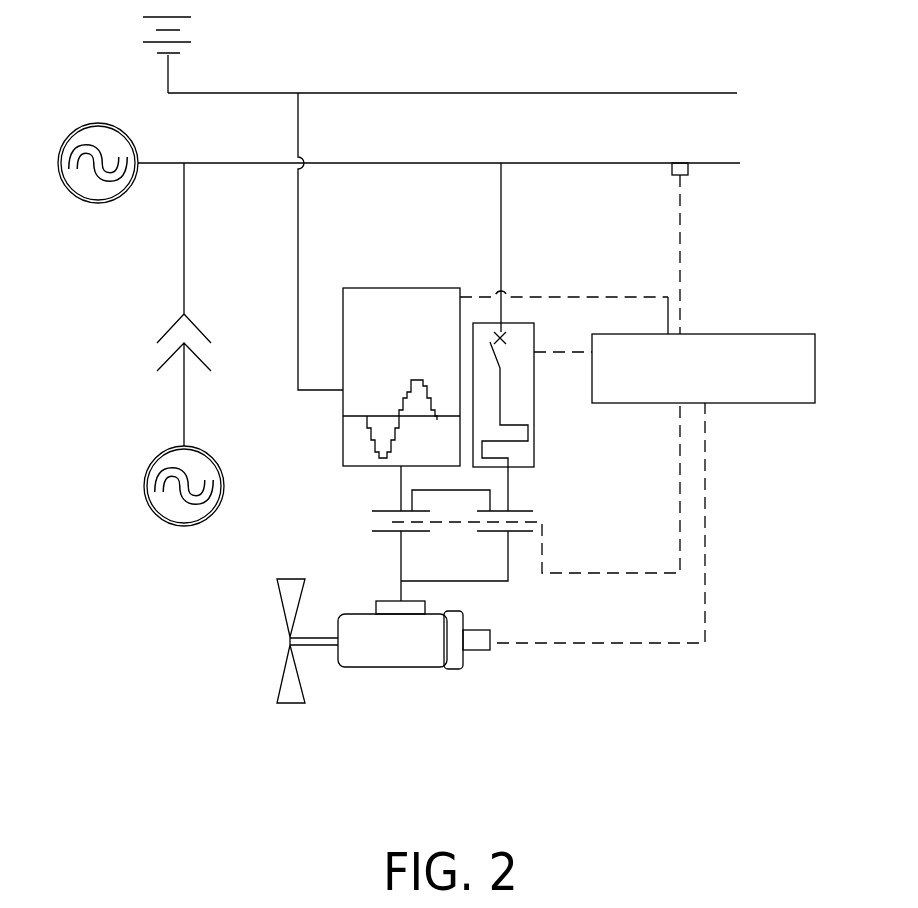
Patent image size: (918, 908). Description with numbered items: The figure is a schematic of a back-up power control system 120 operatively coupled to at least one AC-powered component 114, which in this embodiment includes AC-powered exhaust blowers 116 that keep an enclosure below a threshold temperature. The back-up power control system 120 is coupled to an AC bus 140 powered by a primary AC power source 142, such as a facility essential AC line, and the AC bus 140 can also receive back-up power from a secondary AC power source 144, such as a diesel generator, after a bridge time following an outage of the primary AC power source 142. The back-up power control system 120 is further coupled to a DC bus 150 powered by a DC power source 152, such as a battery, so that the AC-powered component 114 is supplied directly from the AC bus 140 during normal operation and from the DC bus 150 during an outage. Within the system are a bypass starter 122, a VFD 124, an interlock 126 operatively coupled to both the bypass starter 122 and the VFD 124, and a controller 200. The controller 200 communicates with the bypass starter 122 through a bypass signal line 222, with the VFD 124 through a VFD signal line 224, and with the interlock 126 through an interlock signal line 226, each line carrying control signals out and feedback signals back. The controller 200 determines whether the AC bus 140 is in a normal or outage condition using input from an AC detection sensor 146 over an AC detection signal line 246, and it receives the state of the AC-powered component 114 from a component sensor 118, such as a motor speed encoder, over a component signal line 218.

The DC power source 152 is at (212, 50).
The DC bus 150 is at (620, 93).
The AC bus 140 is at (608, 163).
The primary AC power source 142 is at (101, 123).
The secondary AC power source 144 is at (150, 512).
The AC detection sensor 146 is at (668, 175).
The AC detection signal line 246 is at (680, 218).
The back-up power control system 120 is at (745, 256).
The VFD 124 is at (382, 287).
The VFD signal line 224 is at (578, 297).
The bypass starter 122 is at (536, 418).
The bypass signal line 222 is at (570, 352).
The controller 200 is at (762, 334).
The interlock 126 is at (570, 511).
The interlock signal line 226 is at (610, 573).
The component sensor 118 is at (475, 630).
The component signal line 218 is at (630, 643).
The AC-powered component 114 is at (492, 692).
The AC-powered exhaust blowers 116 is at (473, 697).